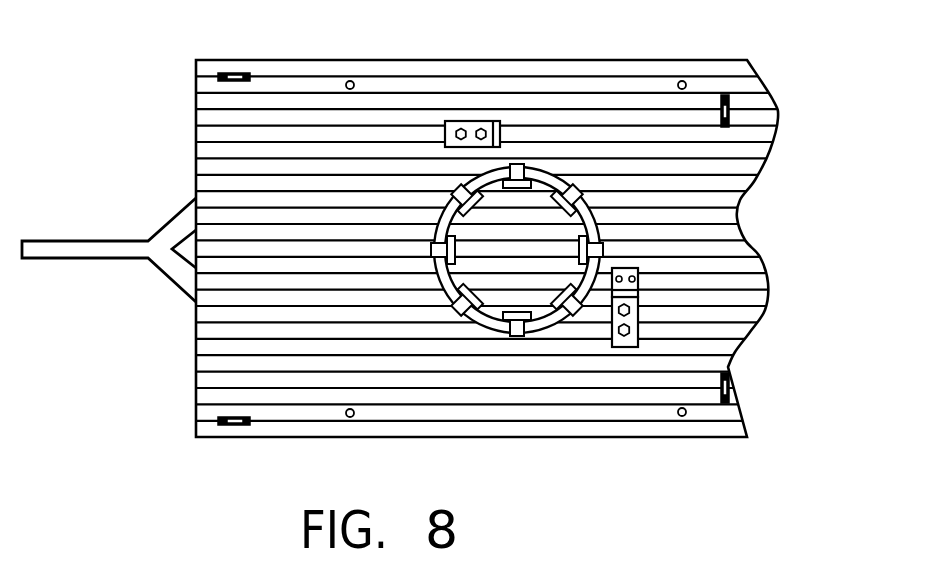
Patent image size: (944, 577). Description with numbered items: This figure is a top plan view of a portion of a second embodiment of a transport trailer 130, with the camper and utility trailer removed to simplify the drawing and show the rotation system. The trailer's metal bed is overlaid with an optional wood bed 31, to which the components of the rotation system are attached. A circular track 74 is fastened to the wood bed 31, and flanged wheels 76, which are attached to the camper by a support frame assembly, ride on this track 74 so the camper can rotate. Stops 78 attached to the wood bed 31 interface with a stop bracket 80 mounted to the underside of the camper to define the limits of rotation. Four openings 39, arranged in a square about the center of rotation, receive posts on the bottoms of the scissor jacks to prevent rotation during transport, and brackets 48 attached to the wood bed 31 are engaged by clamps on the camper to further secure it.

The transport trailer 130 is at (196, 88).
The wood bed 31 is at (737, 165).
The brackets 48 is at (233, 73).
The openings 39 is at (350, 81).
The stops 78 is at (475, 121).
The flanged wheels 76 is at (532, 172).
The track 74 is at (547, 323).
The stop bracket 80 is at (640, 287).